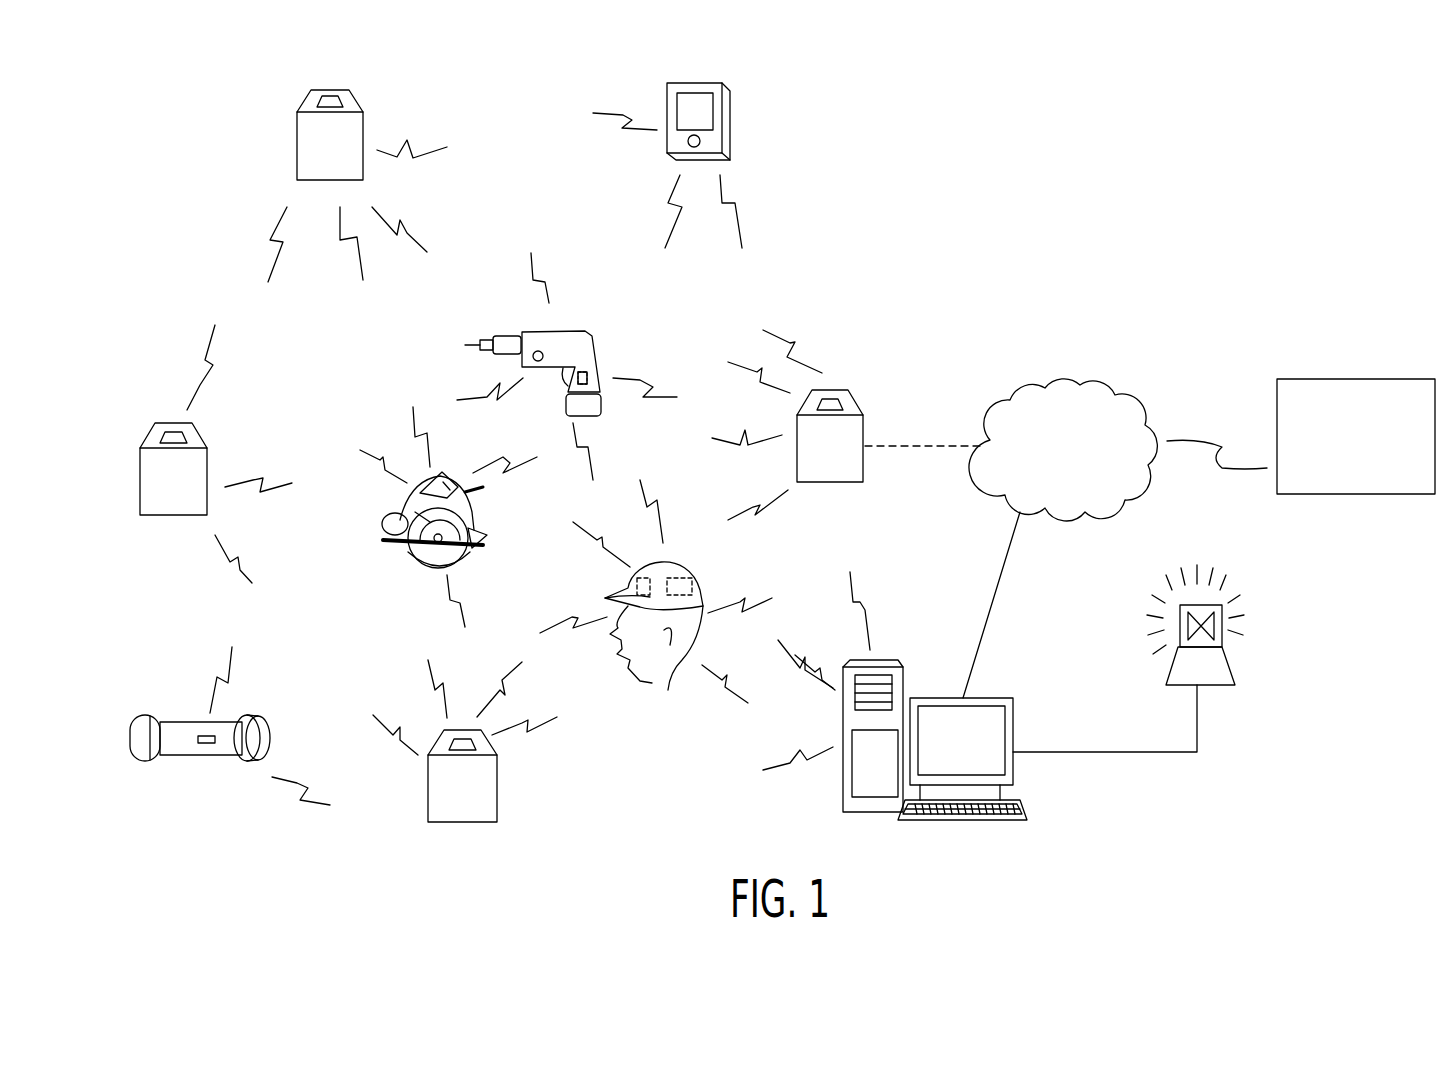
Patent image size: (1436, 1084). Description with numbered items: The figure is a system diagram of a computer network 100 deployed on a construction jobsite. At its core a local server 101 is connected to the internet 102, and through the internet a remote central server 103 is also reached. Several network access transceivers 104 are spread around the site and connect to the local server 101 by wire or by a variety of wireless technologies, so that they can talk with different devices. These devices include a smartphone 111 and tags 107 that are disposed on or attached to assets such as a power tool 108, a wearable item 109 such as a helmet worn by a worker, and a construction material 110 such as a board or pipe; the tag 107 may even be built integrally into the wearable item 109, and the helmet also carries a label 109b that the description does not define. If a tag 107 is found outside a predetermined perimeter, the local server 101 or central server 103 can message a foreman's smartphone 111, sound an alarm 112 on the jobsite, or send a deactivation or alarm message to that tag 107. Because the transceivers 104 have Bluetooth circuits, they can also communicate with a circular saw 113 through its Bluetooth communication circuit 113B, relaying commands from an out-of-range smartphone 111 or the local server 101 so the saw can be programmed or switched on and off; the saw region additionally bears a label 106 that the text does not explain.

The computer network 100 is at (990, 225).
The local server 101 is at (998, 718).
The internet 102 is at (1120, 386).
The central server 103 is at (1405, 379).
The network access transceiver 104 is at (355, 132).
The circular saw power tool 106 is at (468, 530).
The tag 107 is at (705, 582).
The power tool 108 is at (590, 337).
The wearable item 109 is at (675, 556).
The hard hat sensor 109b is at (632, 580).
The construction material 110 is at (188, 728).
The smartphone 111 is at (713, 144).
The alarm 112 is at (1222, 672).
The circular saw 113 is at (415, 512).
The Bluetooth communication circuit 113B is at (445, 482).